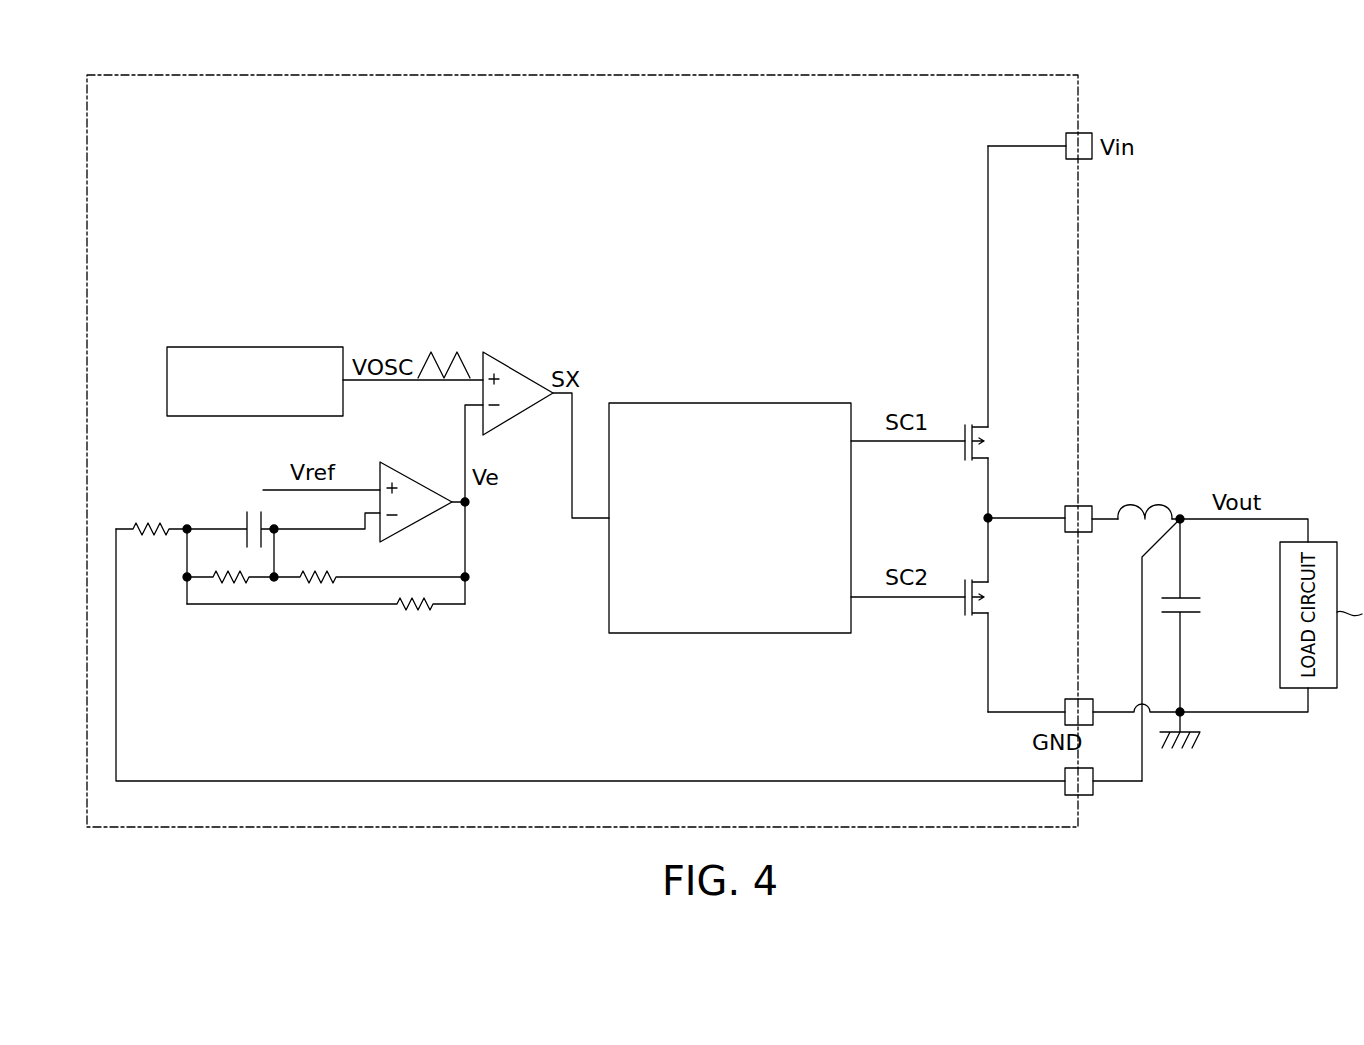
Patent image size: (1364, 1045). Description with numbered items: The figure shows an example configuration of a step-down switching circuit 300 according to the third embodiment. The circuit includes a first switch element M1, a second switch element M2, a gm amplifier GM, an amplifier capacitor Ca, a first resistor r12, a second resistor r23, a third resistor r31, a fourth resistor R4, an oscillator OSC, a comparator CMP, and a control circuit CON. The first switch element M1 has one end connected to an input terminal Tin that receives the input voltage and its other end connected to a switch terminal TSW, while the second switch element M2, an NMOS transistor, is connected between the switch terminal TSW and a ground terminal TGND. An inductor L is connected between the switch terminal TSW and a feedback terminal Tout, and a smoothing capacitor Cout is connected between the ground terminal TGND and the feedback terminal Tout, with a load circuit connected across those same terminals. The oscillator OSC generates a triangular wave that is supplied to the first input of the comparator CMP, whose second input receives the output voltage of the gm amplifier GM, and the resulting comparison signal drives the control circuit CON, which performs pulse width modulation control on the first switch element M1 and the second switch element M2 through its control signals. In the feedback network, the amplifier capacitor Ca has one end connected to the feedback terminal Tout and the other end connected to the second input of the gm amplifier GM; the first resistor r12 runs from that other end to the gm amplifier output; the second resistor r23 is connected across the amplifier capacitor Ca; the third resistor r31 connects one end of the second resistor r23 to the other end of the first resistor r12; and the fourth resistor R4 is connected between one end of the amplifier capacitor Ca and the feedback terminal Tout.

The step-down switching circuit 300 is at (1080, 810).
The oscillator OSC is at (255, 347).
The comparator CMP is at (517, 368).
The control circuit CON is at (730, 403).
The gm amplifier GM is at (415, 472).
The first switch element M1 is at (984, 425).
The second switch element M2 is at (982, 615).
The input terminal Tin is at (1066, 133).
The switch terminal TSW is at (1068, 506).
The ground terminal TGND is at (1068, 699).
The feedback terminal Tout is at (1065, 788).
The inductor L is at (1145, 505).
The smoothing capacitor Cout is at (1190, 598).
The fourth resistor R4 is at (151, 523).
The amplifier capacitor Ca is at (243, 516).
The second resistor r23 is at (232, 583).
The first resistor r12 is at (318, 583).
The third resistor r31 is at (415, 610).